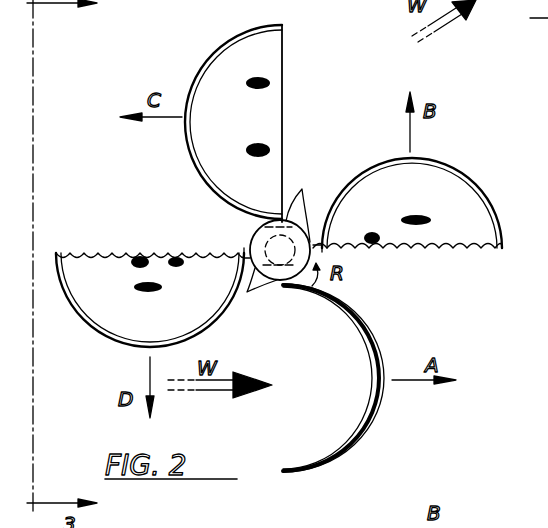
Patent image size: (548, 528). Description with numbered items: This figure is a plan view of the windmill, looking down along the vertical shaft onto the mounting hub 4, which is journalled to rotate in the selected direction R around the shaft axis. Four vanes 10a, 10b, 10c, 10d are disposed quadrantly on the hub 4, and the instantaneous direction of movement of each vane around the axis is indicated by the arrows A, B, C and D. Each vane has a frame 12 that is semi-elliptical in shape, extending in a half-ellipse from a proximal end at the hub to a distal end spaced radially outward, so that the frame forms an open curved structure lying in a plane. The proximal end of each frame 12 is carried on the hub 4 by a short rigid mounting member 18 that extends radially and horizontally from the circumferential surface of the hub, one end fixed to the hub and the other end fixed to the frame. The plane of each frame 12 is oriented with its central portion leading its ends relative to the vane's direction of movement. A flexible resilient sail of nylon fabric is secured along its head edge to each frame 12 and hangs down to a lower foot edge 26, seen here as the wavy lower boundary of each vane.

The mounting hub 4 is at (256, 240).
The vane 10a is at (373, 414).
The vane 10b is at (446, 185).
The vane 10c is at (230, 64).
The vane 10d is at (133, 231).
The frame 12 is at (352, 328).
The mounting member 18 is at (287, 249).
The foot edge 26 is at (283, 80).